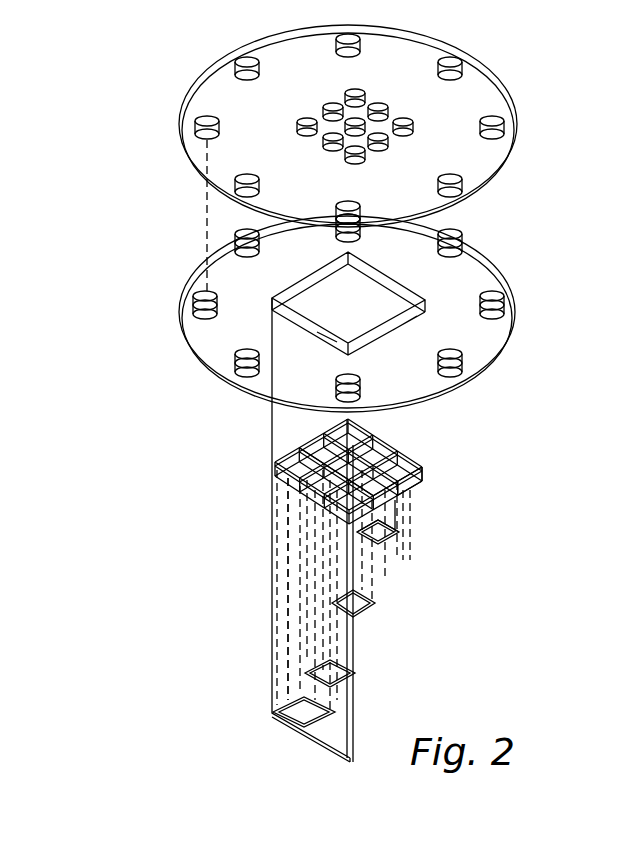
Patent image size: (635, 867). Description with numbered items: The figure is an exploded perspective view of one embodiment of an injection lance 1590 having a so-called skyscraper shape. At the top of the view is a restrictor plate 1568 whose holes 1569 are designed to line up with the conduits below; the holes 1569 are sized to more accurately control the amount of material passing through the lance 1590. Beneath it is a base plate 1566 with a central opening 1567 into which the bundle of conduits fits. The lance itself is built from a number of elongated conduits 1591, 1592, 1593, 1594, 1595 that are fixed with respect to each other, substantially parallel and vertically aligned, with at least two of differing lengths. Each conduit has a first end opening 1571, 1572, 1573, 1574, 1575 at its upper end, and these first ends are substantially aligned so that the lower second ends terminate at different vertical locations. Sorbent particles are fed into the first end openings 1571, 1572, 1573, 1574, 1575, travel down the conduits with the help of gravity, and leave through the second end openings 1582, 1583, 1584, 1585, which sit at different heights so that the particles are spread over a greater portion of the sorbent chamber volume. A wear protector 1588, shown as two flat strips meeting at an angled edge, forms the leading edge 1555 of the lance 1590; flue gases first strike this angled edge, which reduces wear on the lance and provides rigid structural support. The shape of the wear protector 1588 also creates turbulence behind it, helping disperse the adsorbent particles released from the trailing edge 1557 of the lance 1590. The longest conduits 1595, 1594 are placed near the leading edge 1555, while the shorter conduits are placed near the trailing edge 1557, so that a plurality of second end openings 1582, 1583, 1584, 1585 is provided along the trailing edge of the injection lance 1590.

The injection lance 1590 is at (91, 124).
The restrictor plate 1568 is at (385, 126).
The holes 1569 is at (306, 120).
The base plate 1566 is at (385, 313).
The central opening 1567 is at (367, 285).
The leading edge 1555 is at (172, 618).
The trailing edge 1557 is at (498, 631).
The first end opening 1571 is at (418, 463).
The elongated conduit 1591 is at (425, 482).
The first end opening 1572 is at (388, 487).
The first end opening 1573 is at (385, 470).
The first end opening 1574 is at (330, 478).
The first end opening 1575 is at (304, 463).
The wear protector 1588 is at (302, 447).
The elongated conduit 1593 is at (375, 573).
The elongated conduit 1594 is at (320, 638).
The elongated conduit 1595 is at (292, 690).
The second end opening 1582 is at (388, 540).
The elongated conduit 1592 is at (398, 522).
The second end opening 1583 is at (385, 610).
The second end opening 1584 is at (340, 678).
The second end opening 1585 is at (298, 726).